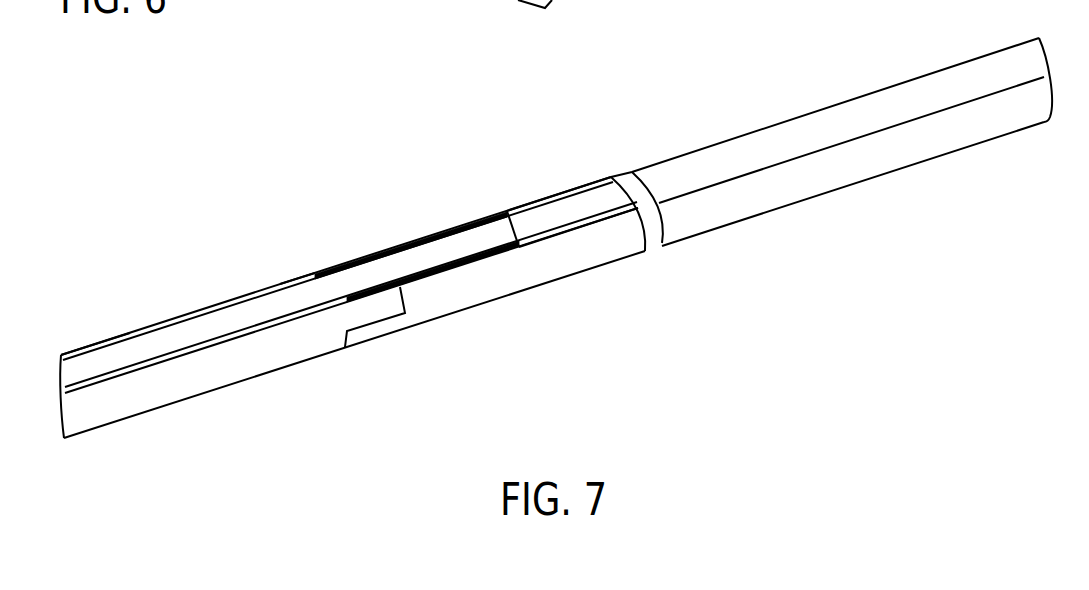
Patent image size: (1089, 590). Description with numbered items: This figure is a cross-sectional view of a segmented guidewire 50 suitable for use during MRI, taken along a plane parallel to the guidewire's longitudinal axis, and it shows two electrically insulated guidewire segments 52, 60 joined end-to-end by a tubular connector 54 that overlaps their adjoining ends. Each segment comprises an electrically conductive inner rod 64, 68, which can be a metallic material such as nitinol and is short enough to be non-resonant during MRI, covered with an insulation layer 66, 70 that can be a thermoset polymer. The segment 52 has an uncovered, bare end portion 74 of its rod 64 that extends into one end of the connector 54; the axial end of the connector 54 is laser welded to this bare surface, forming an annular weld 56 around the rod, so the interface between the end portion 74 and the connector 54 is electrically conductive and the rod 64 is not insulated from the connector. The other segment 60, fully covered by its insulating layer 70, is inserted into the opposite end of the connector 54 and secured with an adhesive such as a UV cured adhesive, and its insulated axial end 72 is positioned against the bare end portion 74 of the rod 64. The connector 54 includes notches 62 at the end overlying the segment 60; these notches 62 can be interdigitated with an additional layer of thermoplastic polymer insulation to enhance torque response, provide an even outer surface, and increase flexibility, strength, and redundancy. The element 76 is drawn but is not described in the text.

The segmented guidewire 50 is at (240, 136).
The guidewire segment 52 is at (799, 61).
The tubular connector 54 is at (525, 290).
The annular weld 56 is at (650, 228).
The insulated guidewire segment 60 is at (206, 274).
The notches 62 is at (383, 324).
The inner rod 64 is at (952, 87).
The insulation layer 66 is at (971, 148).
The inner rod 68 is at (298, 293).
The insulation layer 70 is at (134, 330).
The insulated axial end 72 is at (505, 222).
The bare end portion 74 is at (587, 203).
The lower rail 76 is at (375, 302).